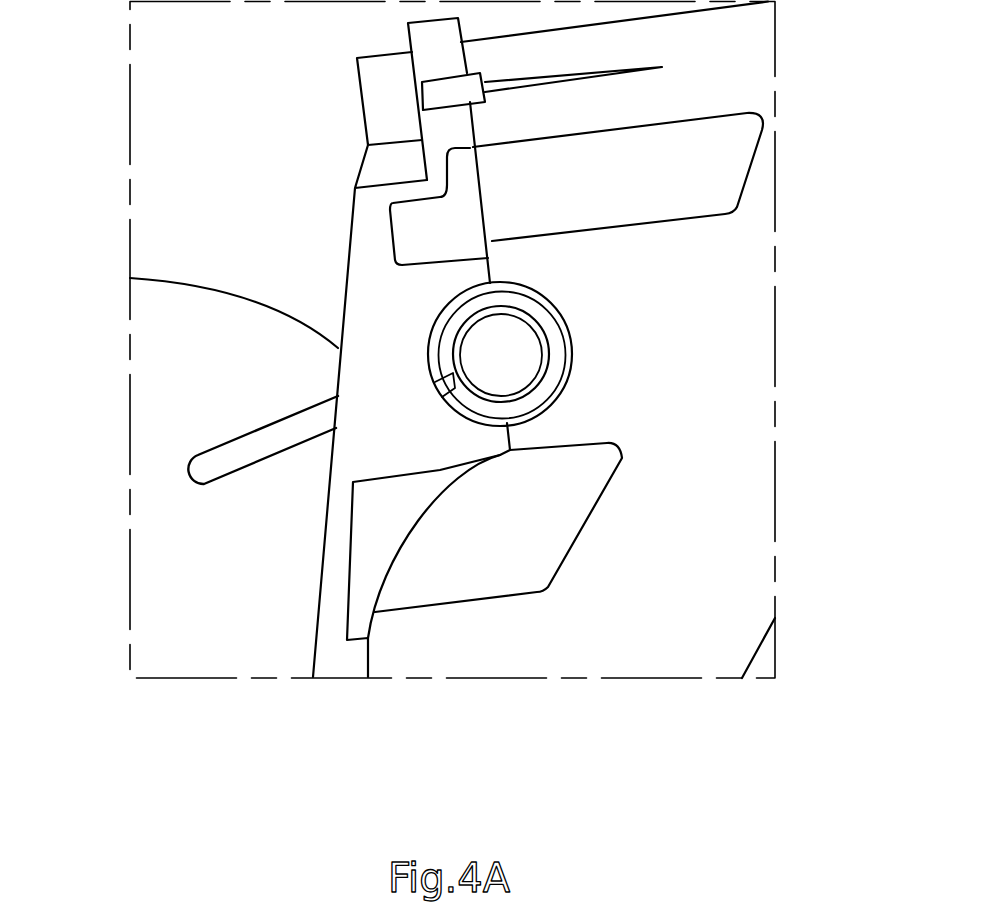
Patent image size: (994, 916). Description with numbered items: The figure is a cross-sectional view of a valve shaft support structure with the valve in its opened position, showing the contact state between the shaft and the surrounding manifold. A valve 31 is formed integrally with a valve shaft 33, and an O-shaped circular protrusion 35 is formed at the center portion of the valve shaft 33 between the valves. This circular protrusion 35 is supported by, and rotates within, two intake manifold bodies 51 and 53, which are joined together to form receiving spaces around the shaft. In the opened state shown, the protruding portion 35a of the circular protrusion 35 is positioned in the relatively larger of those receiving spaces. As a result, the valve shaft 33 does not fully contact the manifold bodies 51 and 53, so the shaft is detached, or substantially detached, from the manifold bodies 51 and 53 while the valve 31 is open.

The valve 31 is at (205, 462).
The valve shaft 33 is at (525, 350).
The circular protrusion 35 is at (543, 312).
The protruding portion 35a is at (435, 393).
The intake manifold body 51 is at (425, 455).
The intake manifold body 53 is at (697, 438).